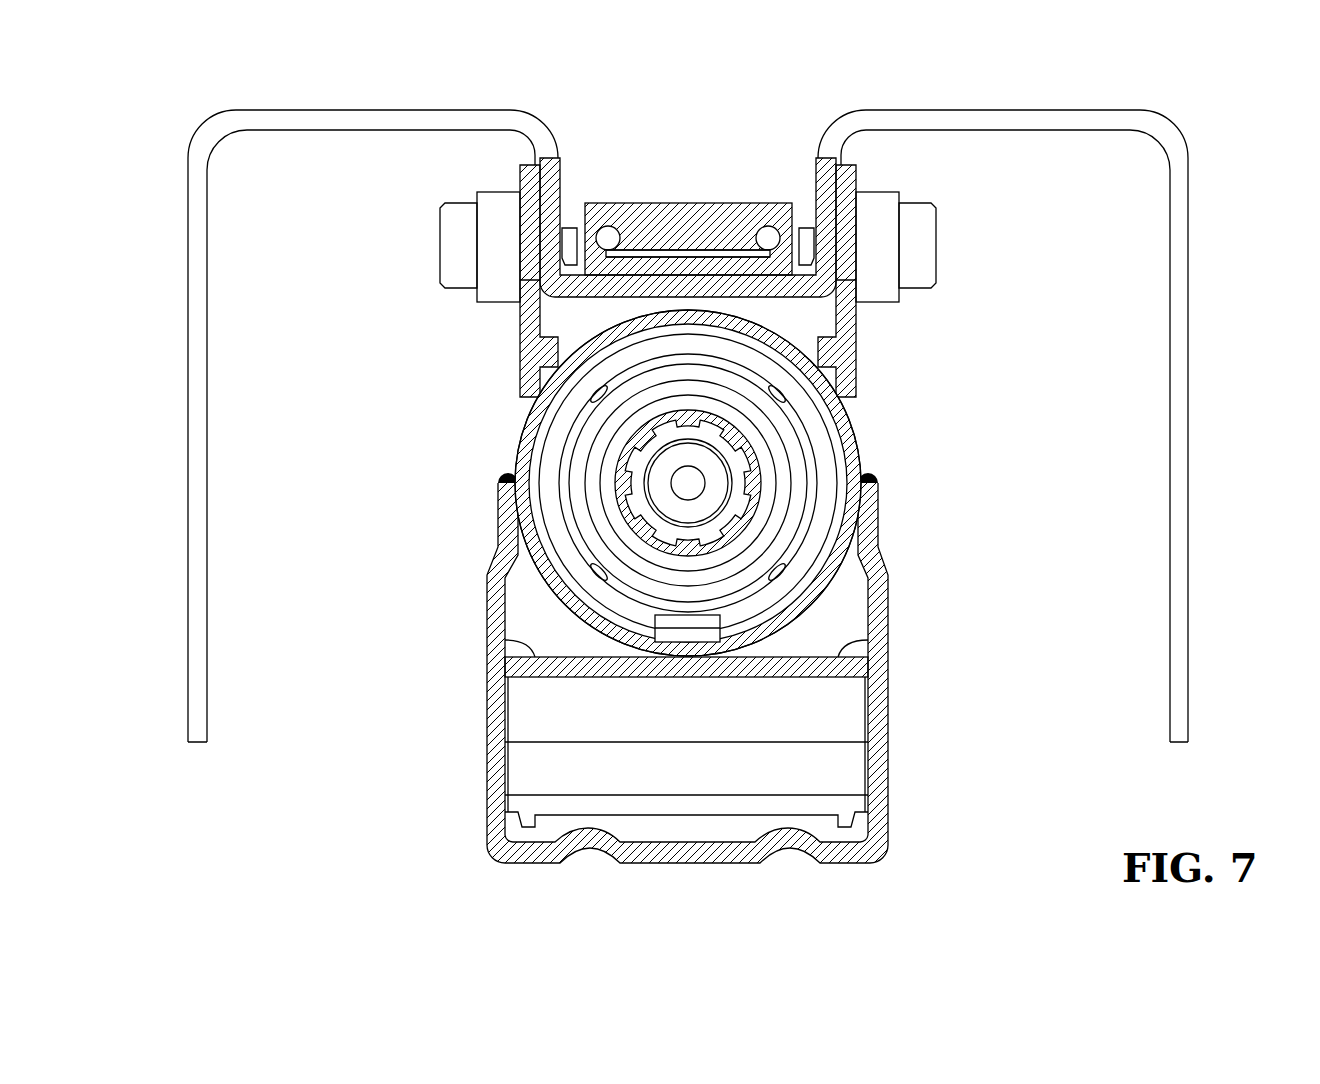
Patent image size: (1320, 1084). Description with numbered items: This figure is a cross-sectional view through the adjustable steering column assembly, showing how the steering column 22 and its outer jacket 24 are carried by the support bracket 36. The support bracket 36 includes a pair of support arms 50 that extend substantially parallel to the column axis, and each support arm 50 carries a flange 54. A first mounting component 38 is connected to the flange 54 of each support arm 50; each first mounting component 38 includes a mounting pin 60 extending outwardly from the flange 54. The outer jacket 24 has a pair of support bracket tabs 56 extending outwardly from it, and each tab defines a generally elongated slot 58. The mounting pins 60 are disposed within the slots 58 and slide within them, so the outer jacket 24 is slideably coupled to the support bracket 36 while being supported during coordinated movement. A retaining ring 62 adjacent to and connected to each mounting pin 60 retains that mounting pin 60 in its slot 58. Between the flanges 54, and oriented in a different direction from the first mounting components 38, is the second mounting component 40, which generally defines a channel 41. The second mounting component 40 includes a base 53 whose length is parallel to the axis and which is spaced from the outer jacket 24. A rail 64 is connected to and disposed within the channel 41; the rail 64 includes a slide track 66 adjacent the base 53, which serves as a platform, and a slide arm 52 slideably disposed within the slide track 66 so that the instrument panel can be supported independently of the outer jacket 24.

The steering column 22 is at (758, 483).
The outer jacket 24 is at (835, 575).
The support bracket 36 is at (185, 152).
The first mounting component 38 is at (688, 238).
The second mounting component 40 is at (686, 245).
The channel 41 is at (566, 232).
The support arm 50 is at (188, 310).
The slide arm 52 is at (633, 205).
The base 53 is at (722, 278).
The flange 54 is at (562, 217).
The support bracket tab 56 is at (520, 395).
The slot 58 is at (520, 278).
The mounting pin 60 is at (440, 250).
The retaining ring 62 is at (490, 193).
The rail 64 is at (688, 176).
The slide track 66 is at (803, 222).